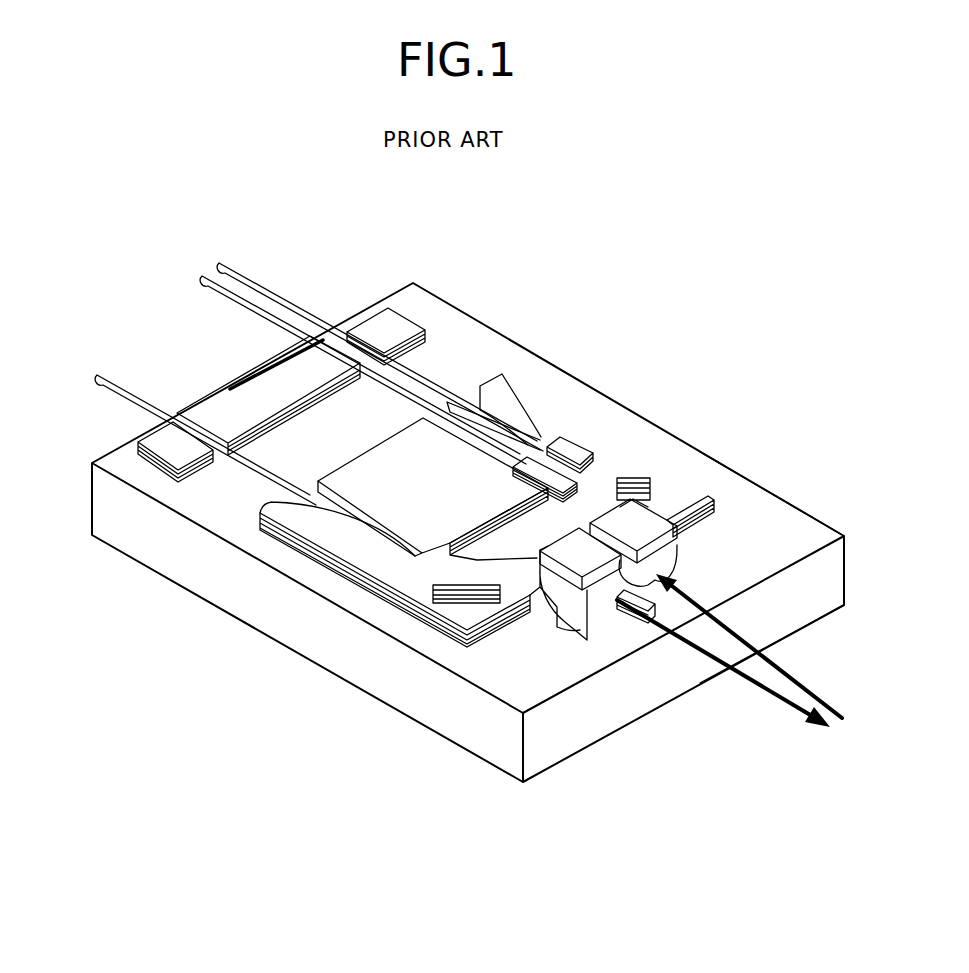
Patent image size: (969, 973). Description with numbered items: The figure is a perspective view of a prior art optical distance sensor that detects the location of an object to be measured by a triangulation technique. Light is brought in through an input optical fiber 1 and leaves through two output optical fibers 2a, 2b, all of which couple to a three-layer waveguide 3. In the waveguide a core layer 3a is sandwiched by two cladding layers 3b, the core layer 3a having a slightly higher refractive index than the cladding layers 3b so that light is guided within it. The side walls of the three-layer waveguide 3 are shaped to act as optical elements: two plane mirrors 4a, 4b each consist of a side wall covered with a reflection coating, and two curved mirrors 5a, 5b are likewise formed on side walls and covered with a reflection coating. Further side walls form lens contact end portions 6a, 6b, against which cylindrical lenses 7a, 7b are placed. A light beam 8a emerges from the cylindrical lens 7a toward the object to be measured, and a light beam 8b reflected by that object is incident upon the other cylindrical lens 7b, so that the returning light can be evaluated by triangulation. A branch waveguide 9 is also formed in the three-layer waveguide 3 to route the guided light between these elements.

The input optical fiber 1 is at (118, 394).
The output optical fiber 2a is at (250, 310).
The output optical fiber 2b is at (270, 283).
The three-layer waveguide 3 is at (434, 470).
The core layer 3a is at (272, 535).
The cladding layers 3b is at (345, 572).
The plane mirror 4a is at (460, 593).
The plane mirror 4b is at (636, 476).
The curved mirror 5a is at (548, 562).
The curved mirror 5b is at (572, 500).
The lens contact end portion 6a is at (493, 630).
The lens contact end portion 6b is at (758, 480).
The cylindrical lens 7a is at (553, 612).
The cylindrical lens 7b is at (651, 522).
The light beam 8a is at (758, 692).
The light beam 8b is at (787, 673).
The branch waveguide 9 is at (604, 498).